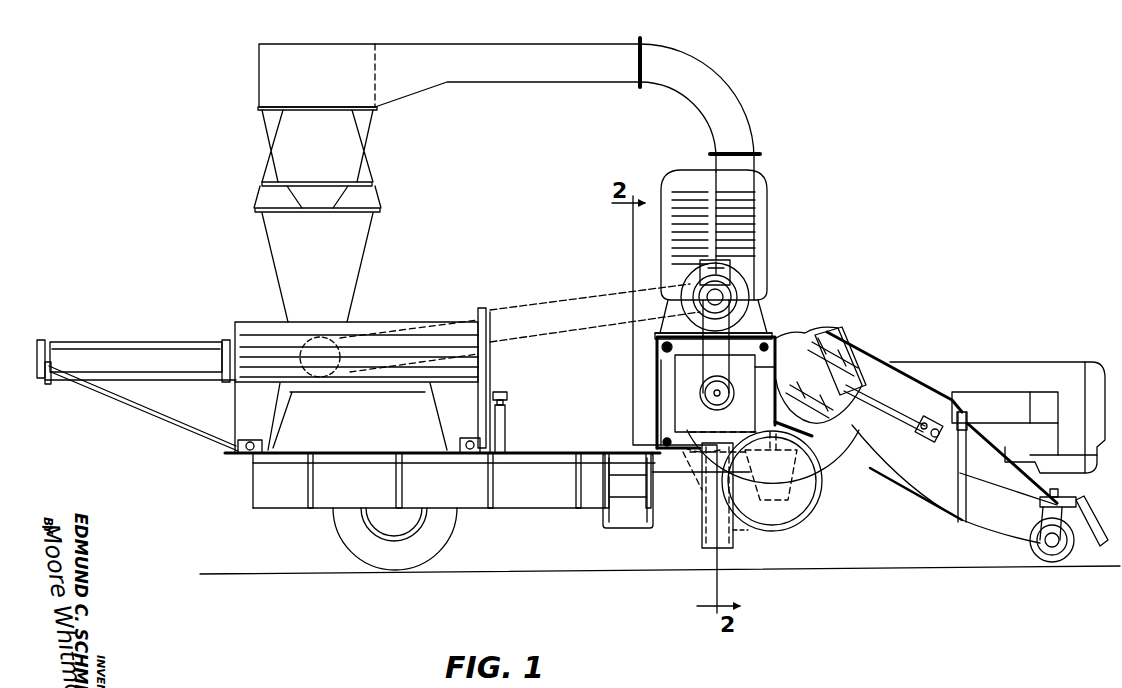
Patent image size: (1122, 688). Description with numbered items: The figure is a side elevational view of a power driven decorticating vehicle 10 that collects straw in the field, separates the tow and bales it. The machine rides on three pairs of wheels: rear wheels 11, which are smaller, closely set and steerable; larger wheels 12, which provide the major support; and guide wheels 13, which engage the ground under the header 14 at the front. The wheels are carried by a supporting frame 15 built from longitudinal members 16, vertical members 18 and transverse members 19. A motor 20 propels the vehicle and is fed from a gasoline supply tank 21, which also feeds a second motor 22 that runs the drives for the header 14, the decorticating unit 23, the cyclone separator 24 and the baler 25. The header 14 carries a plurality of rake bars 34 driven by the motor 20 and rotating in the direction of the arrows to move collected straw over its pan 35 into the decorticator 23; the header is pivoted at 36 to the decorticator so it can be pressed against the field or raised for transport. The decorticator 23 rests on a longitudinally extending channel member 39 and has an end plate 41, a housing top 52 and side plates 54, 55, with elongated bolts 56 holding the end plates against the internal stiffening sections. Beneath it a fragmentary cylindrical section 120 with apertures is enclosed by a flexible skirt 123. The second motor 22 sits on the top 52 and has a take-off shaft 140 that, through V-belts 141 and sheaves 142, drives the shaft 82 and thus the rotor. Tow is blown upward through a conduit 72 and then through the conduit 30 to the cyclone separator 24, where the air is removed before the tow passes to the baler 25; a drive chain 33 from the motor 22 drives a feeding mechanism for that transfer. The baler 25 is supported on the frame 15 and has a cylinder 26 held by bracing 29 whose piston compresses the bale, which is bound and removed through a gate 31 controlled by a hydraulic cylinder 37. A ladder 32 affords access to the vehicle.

The power driven decorticating vehicle 10 is at (834, 236).
The rear wheels 11 is at (350, 547).
The main supporting wheels 12 is at (838, 536).
The header guide wheels 13 is at (1037, 556).
The header 14 is at (960, 525).
The supporting frame 15 is at (276, 462).
The longitudinal frame members 16 is at (345, 458).
The vertical frame members 18 is at (402, 476).
The transverse frame members 19 is at (238, 455).
The motor 20 is at (1055, 362).
The gasoline supply tank 21 is at (538, 489).
The second motor 22 is at (768, 203).
The decorticating unit 23 is at (655, 388).
The cyclone separator 24 is at (370, 130).
The baler 25 is at (368, 317).
The cylinder 26 is at (163, 354).
The bracing 29 is at (157, 418).
The conduit 30 is at (585, 47).
The gate 31 is at (492, 370).
The ladder 32 is at (606, 523).
The drive chain 33 is at (583, 300).
The rake bars 34 is at (828, 343).
The pan 35 is at (820, 418).
The pivot 36 is at (770, 368).
The hydraulic cylinder 37 is at (505, 433).
The channel member 39 is at (667, 464).
The end plate 41 is at (750, 418).
The top 52 is at (782, 345).
The side plate 54 is at (660, 362).
The second side plate 55 is at (818, 338).
The elongated bolts 56 is at (660, 346).
The conduit 72 is at (748, 330).
The shaft 82 is at (712, 395).
The fragmentary cylindrical section 120 is at (702, 498).
The flexible skirt 123 is at (736, 535).
The take-off shaft 140 is at (742, 294).
The V-belts 141 is at (696, 326).
The sheaves 142 is at (715, 380).